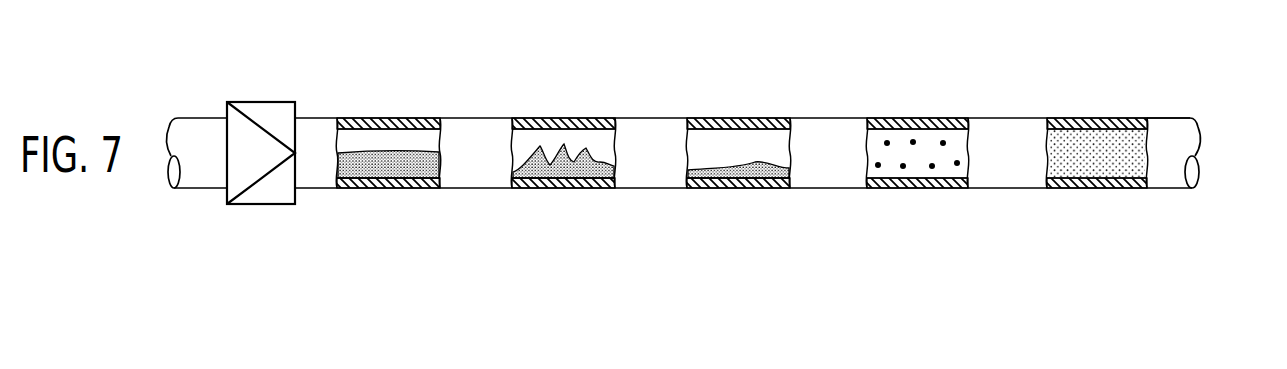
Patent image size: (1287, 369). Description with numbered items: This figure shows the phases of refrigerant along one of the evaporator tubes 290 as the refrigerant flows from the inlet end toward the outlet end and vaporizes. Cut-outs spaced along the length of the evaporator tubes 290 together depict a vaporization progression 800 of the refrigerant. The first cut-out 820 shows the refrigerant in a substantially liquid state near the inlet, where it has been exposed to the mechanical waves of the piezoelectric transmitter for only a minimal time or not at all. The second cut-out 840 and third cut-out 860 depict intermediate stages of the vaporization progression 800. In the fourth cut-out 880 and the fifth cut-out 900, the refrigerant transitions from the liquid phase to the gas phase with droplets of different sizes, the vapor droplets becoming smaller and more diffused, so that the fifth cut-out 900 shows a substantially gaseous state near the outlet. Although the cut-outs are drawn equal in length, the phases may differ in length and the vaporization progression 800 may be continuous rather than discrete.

The vaporization progression 800 is at (1044, 72).
The first cut-out 820 is at (383, 118).
The second cut-out 840 is at (563, 118).
The third cut-out 860 is at (732, 118).
The fourth cut-out 880 is at (915, 118).
The fifth cut-out 900 is at (1070, 118).
The evaporator tubes 290 is at (1180, 118).